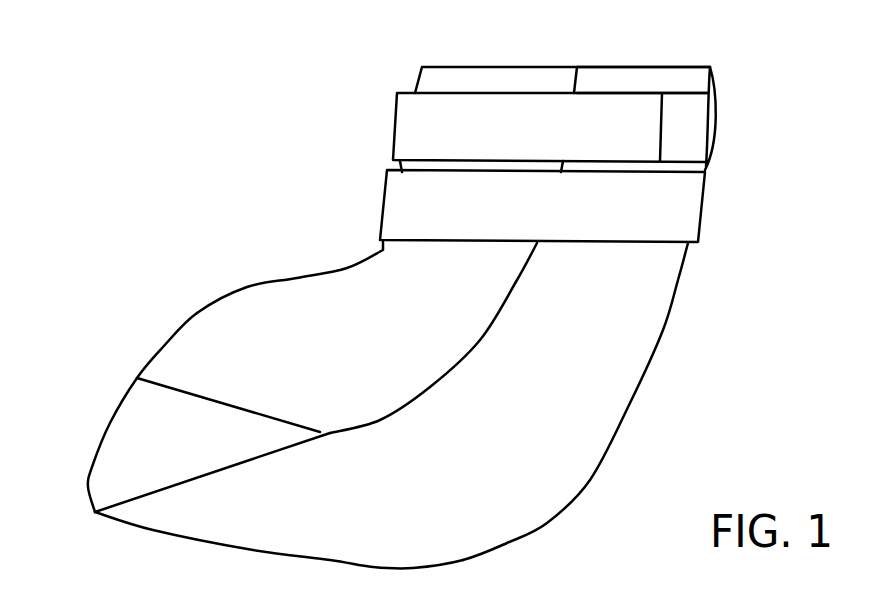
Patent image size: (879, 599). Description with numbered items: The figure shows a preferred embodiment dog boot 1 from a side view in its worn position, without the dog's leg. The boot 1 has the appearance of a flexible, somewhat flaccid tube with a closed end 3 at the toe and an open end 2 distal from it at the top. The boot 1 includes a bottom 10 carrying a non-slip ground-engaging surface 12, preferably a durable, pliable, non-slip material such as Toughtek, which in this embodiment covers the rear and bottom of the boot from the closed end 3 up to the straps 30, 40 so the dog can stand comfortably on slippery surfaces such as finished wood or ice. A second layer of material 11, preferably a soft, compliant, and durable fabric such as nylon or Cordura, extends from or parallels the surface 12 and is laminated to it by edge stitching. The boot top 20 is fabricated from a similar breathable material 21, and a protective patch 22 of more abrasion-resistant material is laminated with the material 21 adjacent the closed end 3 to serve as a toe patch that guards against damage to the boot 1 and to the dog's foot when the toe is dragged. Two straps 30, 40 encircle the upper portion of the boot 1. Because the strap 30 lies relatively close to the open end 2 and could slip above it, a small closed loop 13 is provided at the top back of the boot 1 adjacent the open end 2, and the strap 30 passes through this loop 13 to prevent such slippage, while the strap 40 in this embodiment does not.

The boot 1 is at (176, 87).
The open end 2 is at (493, 57).
The closed end 3 is at (95, 512).
The bottom 10 is at (634, 412).
The second layer of material 11 is at (680, 77).
The non-slip ground-engaging surface 12 is at (497, 540).
The closed loop 13 is at (720, 130).
The boot top 20 is at (294, 270).
The material 21 is at (203, 320).
The protective patch 22 is at (120, 427).
The strap 30 is at (418, 135).
The strap 40 is at (400, 208).